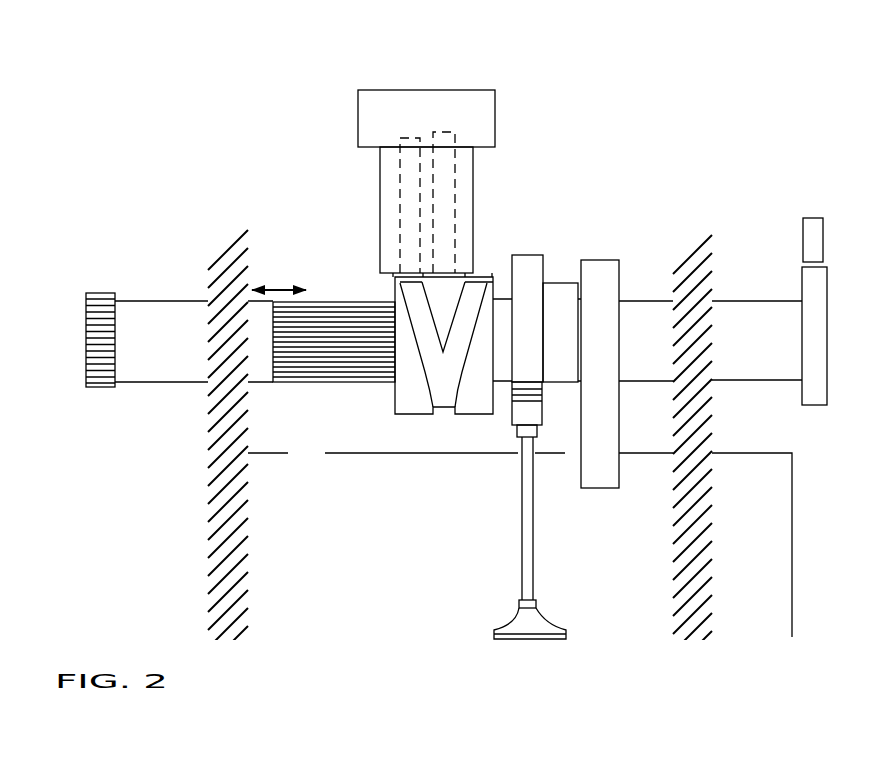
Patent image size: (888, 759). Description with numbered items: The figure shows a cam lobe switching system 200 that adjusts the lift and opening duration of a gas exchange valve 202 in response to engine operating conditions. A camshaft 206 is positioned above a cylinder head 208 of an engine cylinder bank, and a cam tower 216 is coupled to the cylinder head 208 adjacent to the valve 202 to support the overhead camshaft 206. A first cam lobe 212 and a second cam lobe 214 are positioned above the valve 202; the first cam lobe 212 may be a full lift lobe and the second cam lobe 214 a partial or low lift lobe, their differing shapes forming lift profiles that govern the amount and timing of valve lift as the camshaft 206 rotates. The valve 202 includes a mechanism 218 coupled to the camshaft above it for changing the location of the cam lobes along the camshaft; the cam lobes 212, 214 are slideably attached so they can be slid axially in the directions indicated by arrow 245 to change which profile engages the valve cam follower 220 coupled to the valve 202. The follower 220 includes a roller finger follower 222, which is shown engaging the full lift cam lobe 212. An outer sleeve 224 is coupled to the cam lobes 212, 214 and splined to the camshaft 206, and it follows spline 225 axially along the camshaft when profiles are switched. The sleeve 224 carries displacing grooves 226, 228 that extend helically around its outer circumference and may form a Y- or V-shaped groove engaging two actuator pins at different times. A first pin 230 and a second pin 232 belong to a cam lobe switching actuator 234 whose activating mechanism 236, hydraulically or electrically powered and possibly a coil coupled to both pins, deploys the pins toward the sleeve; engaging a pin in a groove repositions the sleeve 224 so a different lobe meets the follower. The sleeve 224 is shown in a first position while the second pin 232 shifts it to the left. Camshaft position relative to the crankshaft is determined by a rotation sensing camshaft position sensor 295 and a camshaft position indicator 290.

The cam lobe switching system 200 is at (572, 152).
The gas exchange valve 202 is at (517, 480).
The camshaft 206 is at (160, 301).
The cylinder head 208 is at (782, 453).
The first cam lobe 212 is at (530, 265).
The second cam lobe 214 is at (548, 288).
The cam tower 216 is at (600, 280).
The mechanism 218 is at (400, 358).
The valve cam follower 220 is at (488, 420).
The roller finger follower 222 is at (528, 405).
The outer sleeve 224 is at (414, 398).
The spline 225 is at (308, 383).
The displacing groove 226 is at (425, 322).
The displacing groove 228 is at (470, 307).
The first actuator pin 230 is at (408, 185).
The second actuator pin 232 is at (440, 173).
The cam lobe switching actuator 234 is at (389, 155).
The activating mechanism 236 is at (415, 103).
The arrow 245 is at (284, 285).
The camshaft position indicator 290 is at (828, 330).
The camshaft position sensor 295 is at (815, 218).